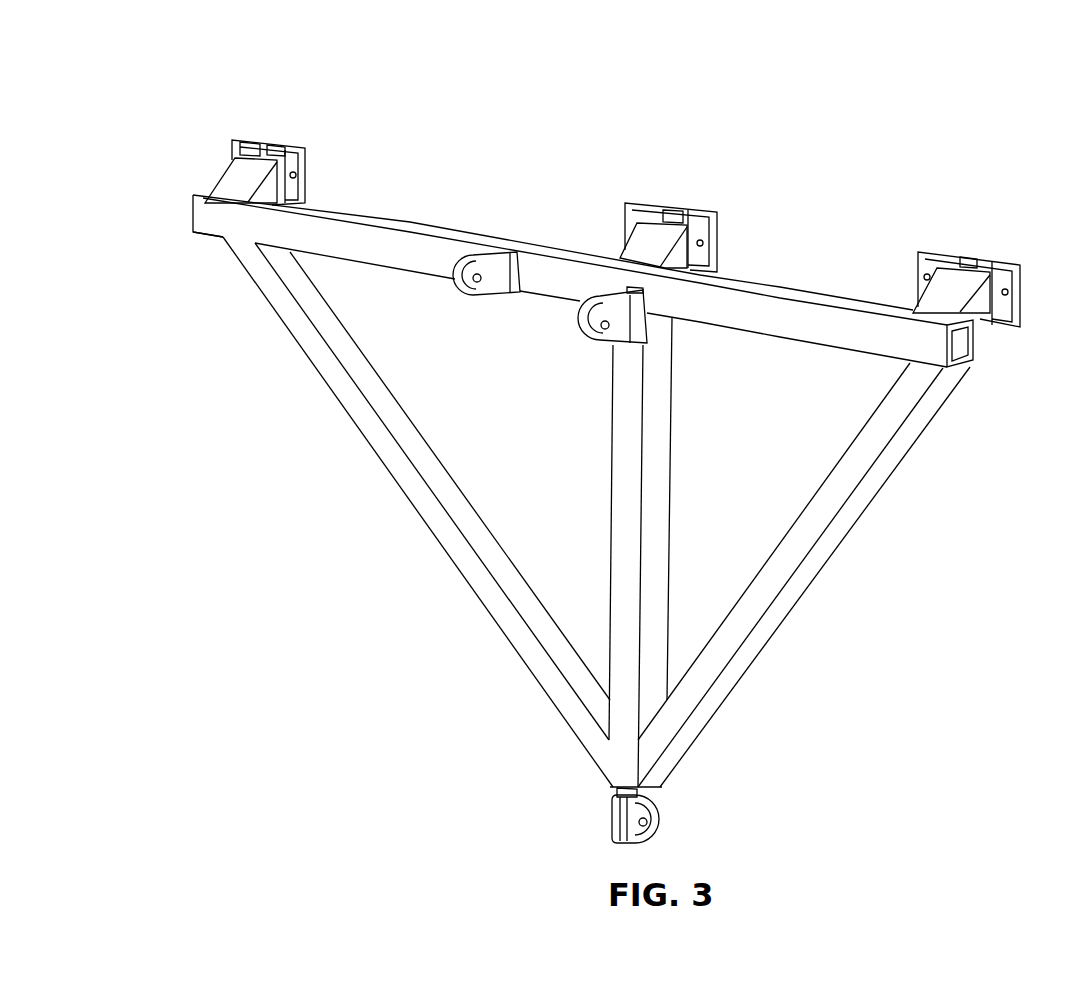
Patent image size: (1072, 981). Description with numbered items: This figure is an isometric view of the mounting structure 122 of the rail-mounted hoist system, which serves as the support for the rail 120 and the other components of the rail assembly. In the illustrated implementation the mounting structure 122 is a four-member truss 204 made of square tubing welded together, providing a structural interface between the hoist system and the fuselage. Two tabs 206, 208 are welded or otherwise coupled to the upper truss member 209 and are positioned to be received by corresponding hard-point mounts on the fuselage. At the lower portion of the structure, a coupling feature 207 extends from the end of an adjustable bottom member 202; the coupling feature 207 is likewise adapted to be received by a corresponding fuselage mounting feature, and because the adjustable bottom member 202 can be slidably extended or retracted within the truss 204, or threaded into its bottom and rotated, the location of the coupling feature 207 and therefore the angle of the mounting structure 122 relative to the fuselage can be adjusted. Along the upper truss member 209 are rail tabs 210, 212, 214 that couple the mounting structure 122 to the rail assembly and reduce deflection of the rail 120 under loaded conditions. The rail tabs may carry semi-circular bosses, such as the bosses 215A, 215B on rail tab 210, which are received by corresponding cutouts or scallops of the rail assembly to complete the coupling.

The rail 120 is at (962, 597).
The mounting structure 122 is at (80, 177).
The adjustable bottom member 202 is at (660, 787).
The truss 204 is at (614, 512).
The tab 206 is at (490, 265).
The coupling feature 207 is at (650, 818).
The tab 208 is at (632, 318).
The upper truss member 209 is at (377, 243).
The rail tab 210 is at (237, 121).
The rail tab 212 is at (628, 208).
The rail tab 214 is at (923, 250).
The boss 215A is at (257, 147).
The boss 215B is at (283, 147).